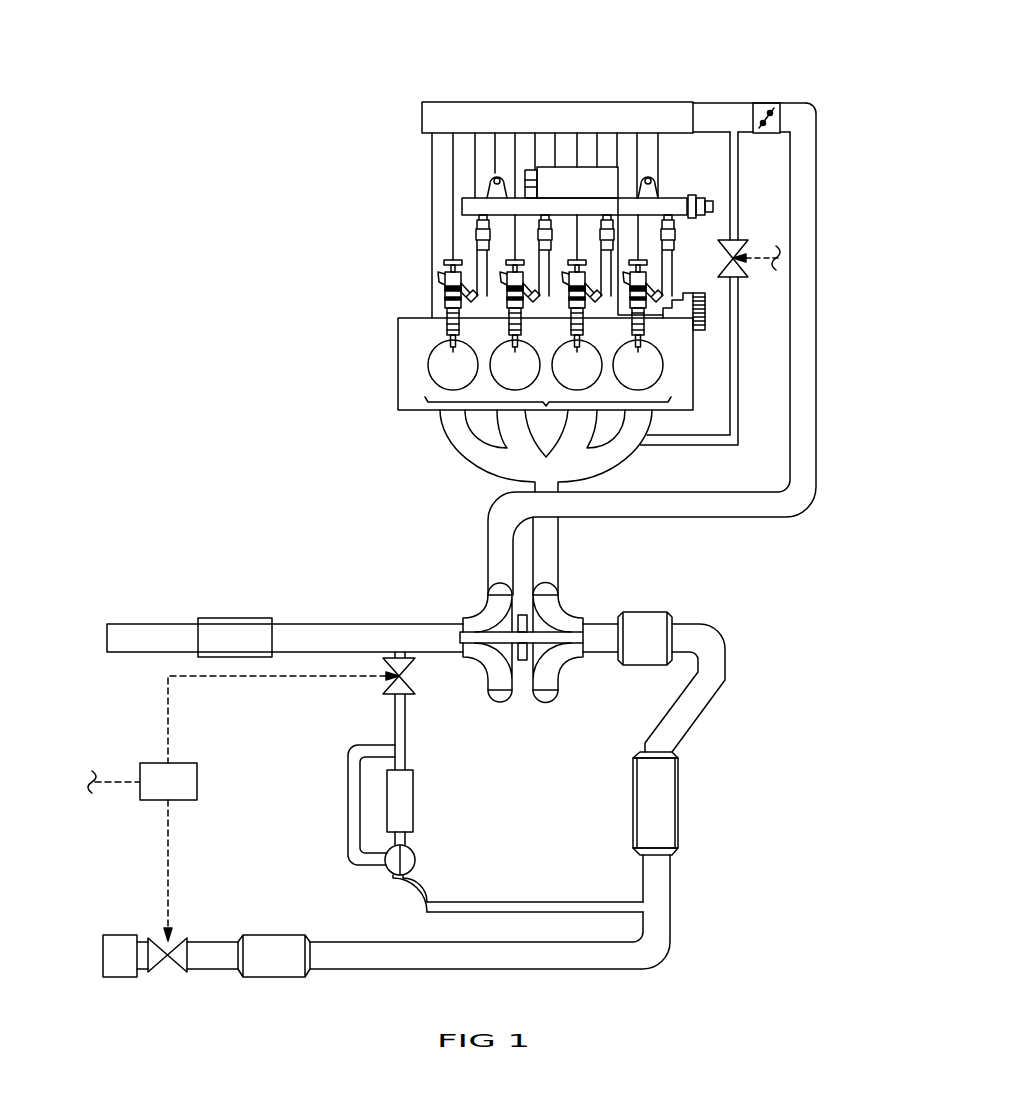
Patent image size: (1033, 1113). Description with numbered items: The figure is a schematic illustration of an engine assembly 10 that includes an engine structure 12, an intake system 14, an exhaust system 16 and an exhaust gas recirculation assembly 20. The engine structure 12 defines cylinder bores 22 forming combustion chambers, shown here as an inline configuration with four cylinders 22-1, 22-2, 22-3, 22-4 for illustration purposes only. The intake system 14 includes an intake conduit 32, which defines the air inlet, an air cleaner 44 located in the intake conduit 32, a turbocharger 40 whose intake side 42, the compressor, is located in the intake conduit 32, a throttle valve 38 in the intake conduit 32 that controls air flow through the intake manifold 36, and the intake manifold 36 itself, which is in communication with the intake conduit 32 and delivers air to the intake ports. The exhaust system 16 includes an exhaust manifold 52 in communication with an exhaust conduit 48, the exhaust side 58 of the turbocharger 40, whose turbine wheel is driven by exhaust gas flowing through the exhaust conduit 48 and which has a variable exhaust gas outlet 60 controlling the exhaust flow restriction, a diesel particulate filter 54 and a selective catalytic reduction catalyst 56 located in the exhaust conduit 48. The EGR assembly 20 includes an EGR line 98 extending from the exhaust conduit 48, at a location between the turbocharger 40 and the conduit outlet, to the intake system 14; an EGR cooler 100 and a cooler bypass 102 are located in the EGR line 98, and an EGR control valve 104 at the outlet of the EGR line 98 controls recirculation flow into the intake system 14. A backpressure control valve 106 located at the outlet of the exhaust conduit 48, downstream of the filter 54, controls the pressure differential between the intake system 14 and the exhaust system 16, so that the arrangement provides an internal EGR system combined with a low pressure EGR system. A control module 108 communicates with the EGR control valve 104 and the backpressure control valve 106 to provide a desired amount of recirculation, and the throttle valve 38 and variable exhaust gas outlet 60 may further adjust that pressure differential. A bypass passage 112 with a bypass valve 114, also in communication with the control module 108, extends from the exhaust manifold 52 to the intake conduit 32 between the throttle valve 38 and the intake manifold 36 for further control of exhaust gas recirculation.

The engine assembly 10 is at (300, 206).
The engine structure 12 is at (398, 363).
The intake system 14 is at (808, 80).
The exhaust system 16 is at (710, 594).
The exhaust gas recirculation (EGR) assembly 20 is at (488, 812).
The cylinder bores 22 is at (559, 380).
The first cylinder 22-1 is at (455, 365).
The second cylinder 22-2 is at (515, 365).
The third cylinder 22-3 is at (577, 365).
The fourth cylinder 22-4 is at (640, 365).
The intake conduit 32 is at (816, 213).
The intake manifold 36 is at (565, 101).
The throttle valve 38 is at (758, 103).
The turbocharger 40 is at (452, 582).
The intake side (compressor) 42 is at (477, 665).
The air cleaner 44 is at (235, 618).
The exhaust conduit 48 is at (700, 717).
The exhaust manifold 52 is at (612, 470).
The diesel particulate filter (DPF) 54 is at (680, 803).
The selective catalytic reduction (SCR) catalyst 56 is at (273, 935).
The exhaust side (turbine) 58 is at (563, 607).
The variable exhaust gas outlet 60 is at (587, 617).
The EGR line 98 is at (537, 902).
The EGR cooler 100 is at (413, 800).
The cooler bypass 102 is at (348, 808).
The EGR control valve 104 is at (388, 694).
The backpressure control valve 106 is at (185, 940).
The control module 108 is at (243, 806).
The bypass passage 112 is at (738, 203).
The bypass valve 114 is at (738, 265).